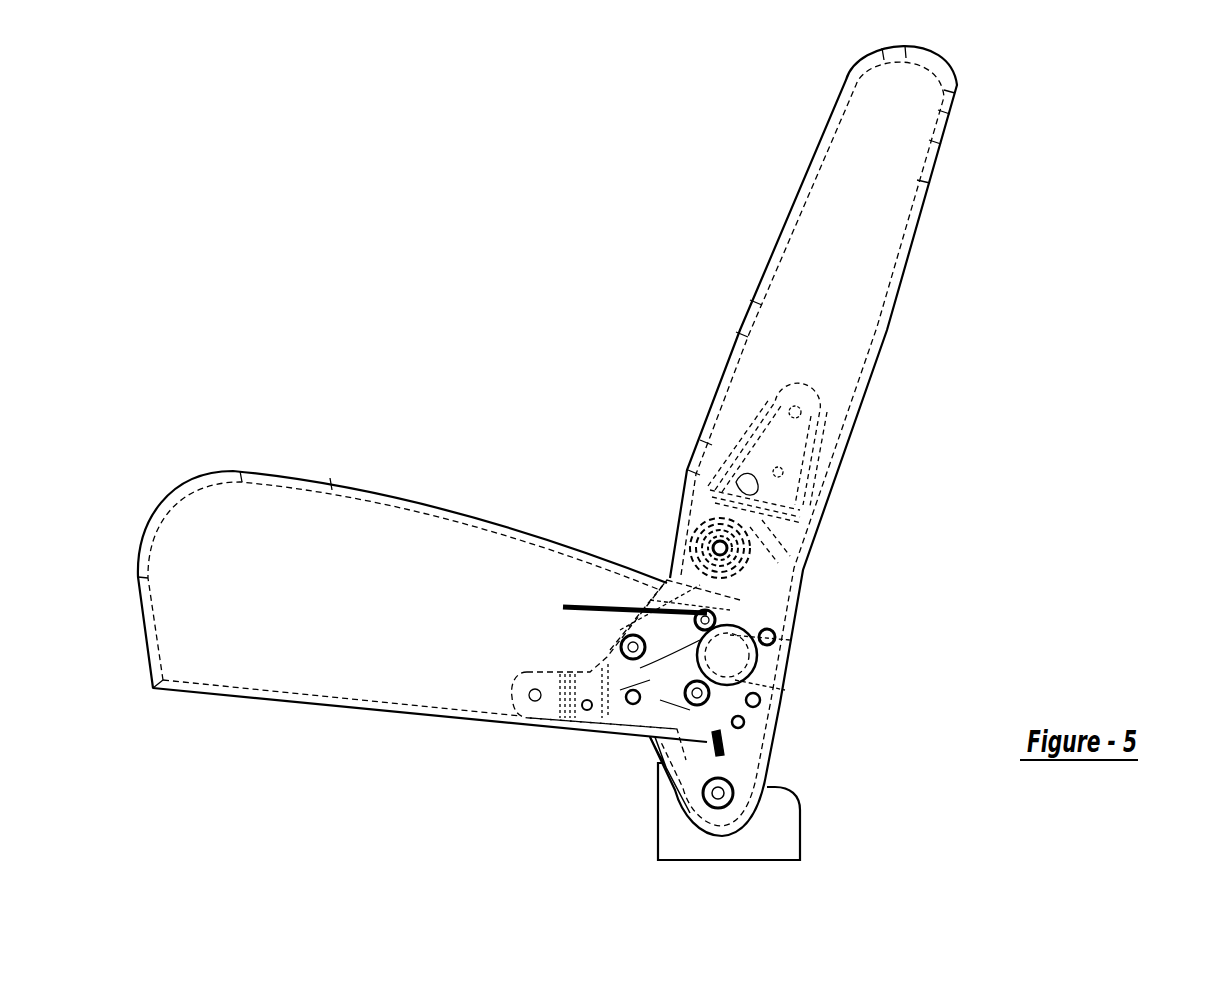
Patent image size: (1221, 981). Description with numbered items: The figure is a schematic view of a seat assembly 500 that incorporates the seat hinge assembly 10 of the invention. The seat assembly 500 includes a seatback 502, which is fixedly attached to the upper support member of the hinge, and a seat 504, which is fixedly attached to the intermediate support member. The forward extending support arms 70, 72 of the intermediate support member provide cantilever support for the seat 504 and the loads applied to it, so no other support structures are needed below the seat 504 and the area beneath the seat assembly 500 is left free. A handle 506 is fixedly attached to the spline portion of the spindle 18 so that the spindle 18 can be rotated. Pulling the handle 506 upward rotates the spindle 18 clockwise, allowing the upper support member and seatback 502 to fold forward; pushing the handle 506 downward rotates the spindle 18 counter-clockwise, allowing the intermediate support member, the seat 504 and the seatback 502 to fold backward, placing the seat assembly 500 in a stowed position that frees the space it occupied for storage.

The seat assembly 500 is at (532, 292).
The seatback 502 is at (833, 187).
The seat 504 is at (360, 530).
The handle 506 is at (596, 606).
The support arm 70 is at (512, 677).
The support arm 72 is at (603, 723).
The seat hinge assembly 10 is at (791, 631).
The spindle 18 is at (740, 680).